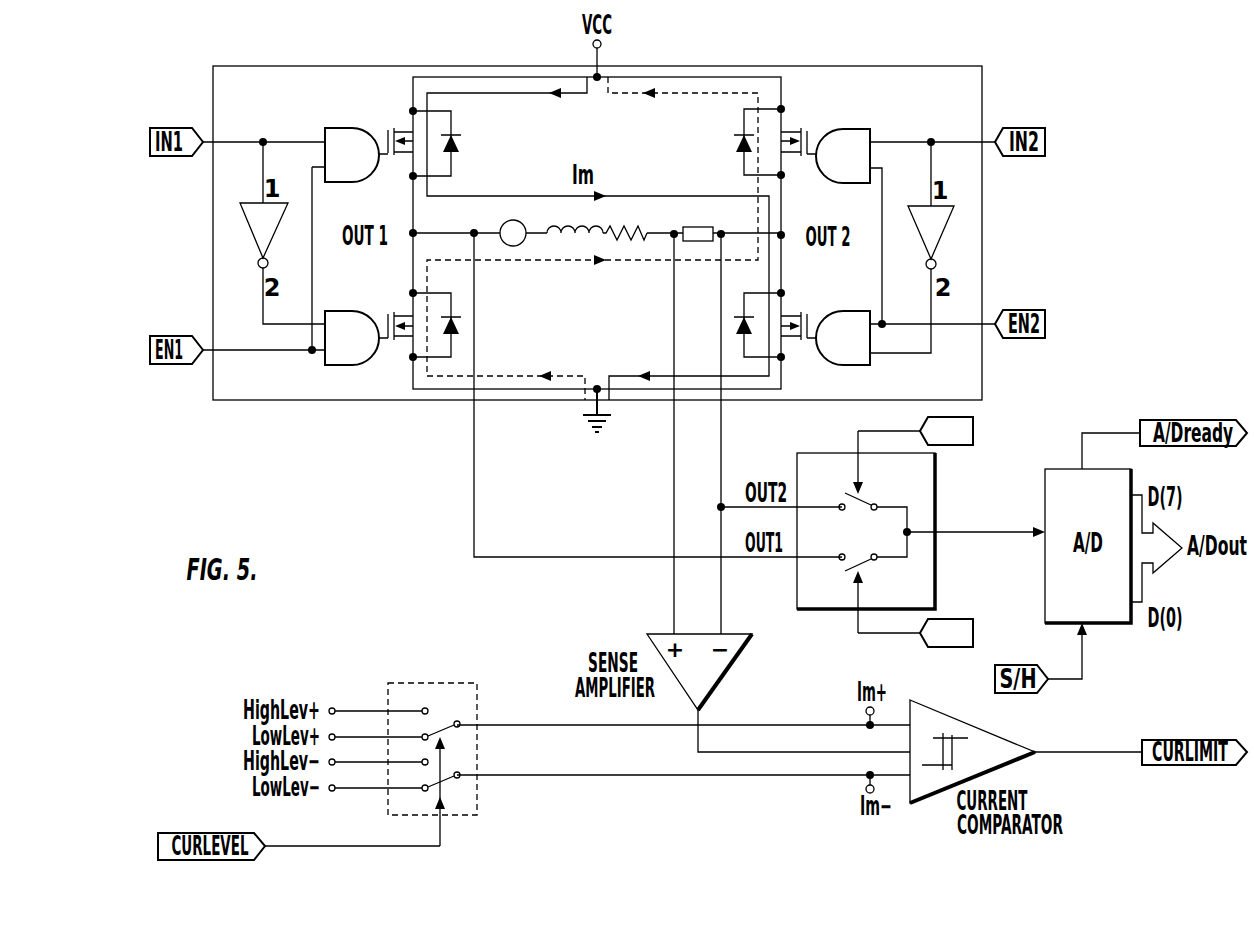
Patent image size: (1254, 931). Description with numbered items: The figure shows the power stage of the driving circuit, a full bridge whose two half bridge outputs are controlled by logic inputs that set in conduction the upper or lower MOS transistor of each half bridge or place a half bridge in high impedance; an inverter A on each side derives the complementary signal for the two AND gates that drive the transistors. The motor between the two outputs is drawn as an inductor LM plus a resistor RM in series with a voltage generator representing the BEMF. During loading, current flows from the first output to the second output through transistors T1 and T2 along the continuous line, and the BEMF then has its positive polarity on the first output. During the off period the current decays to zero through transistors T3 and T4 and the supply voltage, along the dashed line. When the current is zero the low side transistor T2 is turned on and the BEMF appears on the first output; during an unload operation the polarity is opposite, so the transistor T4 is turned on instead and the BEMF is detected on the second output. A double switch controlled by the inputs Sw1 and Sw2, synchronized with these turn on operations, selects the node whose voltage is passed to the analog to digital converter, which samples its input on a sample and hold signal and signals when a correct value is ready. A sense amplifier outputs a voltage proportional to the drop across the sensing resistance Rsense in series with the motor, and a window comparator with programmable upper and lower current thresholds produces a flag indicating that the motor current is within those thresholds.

The transistor T1 is at (393, 146).
The transistor T2 is at (802, 328).
The transistor T3 is at (802, 146).
The transistor T4 is at (393, 327).
The inverter A is at (609, 247).
The back electromotive force BEMF is at (513, 220).
The inductor LM is at (575, 216).
The resistor RM is at (625, 219).
The sensing resistance Rsense is at (710, 220).
The switch Sw1 is at (906, 601).
The switch Sw2 is at (906, 463).